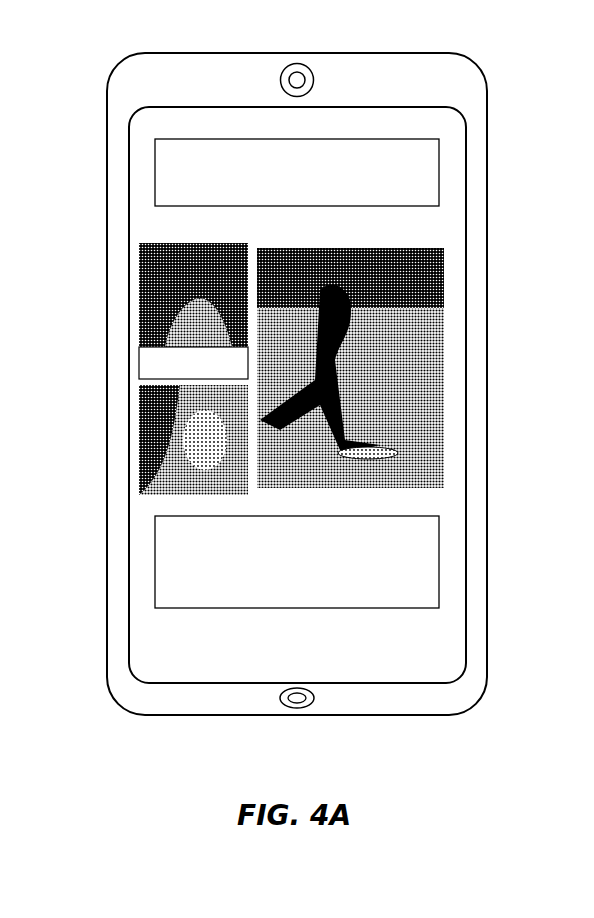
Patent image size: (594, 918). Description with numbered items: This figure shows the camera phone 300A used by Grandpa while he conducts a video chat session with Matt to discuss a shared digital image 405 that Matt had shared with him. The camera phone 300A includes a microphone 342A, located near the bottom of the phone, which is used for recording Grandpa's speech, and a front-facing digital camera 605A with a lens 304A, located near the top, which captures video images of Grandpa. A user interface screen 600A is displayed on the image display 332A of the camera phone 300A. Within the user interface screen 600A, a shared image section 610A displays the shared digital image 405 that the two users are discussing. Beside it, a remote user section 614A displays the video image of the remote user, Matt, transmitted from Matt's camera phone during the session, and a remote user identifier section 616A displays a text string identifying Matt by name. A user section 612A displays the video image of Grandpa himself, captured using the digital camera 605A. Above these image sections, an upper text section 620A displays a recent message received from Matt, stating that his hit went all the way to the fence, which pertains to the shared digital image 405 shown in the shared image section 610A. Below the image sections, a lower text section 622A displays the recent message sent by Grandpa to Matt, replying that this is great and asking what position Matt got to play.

The camera phone 300A is at (107, 108).
The lens 304A is at (288, 66).
The front-facing digital camera 605A is at (308, 66).
The image display 332A is at (129, 172).
The microphone 342A is at (297, 709).
The user interface screen 600A is at (293, 373).
The upper text section 620A is at (439, 172).
The remote user section 614A is at (139, 298).
The remote user identifier section 616A is at (139, 365).
The user section 612A is at (139, 438).
The shared image section 610A is at (402, 368).
The shared digital image 405 is at (413, 450).
The lower text section 622A is at (439, 551).